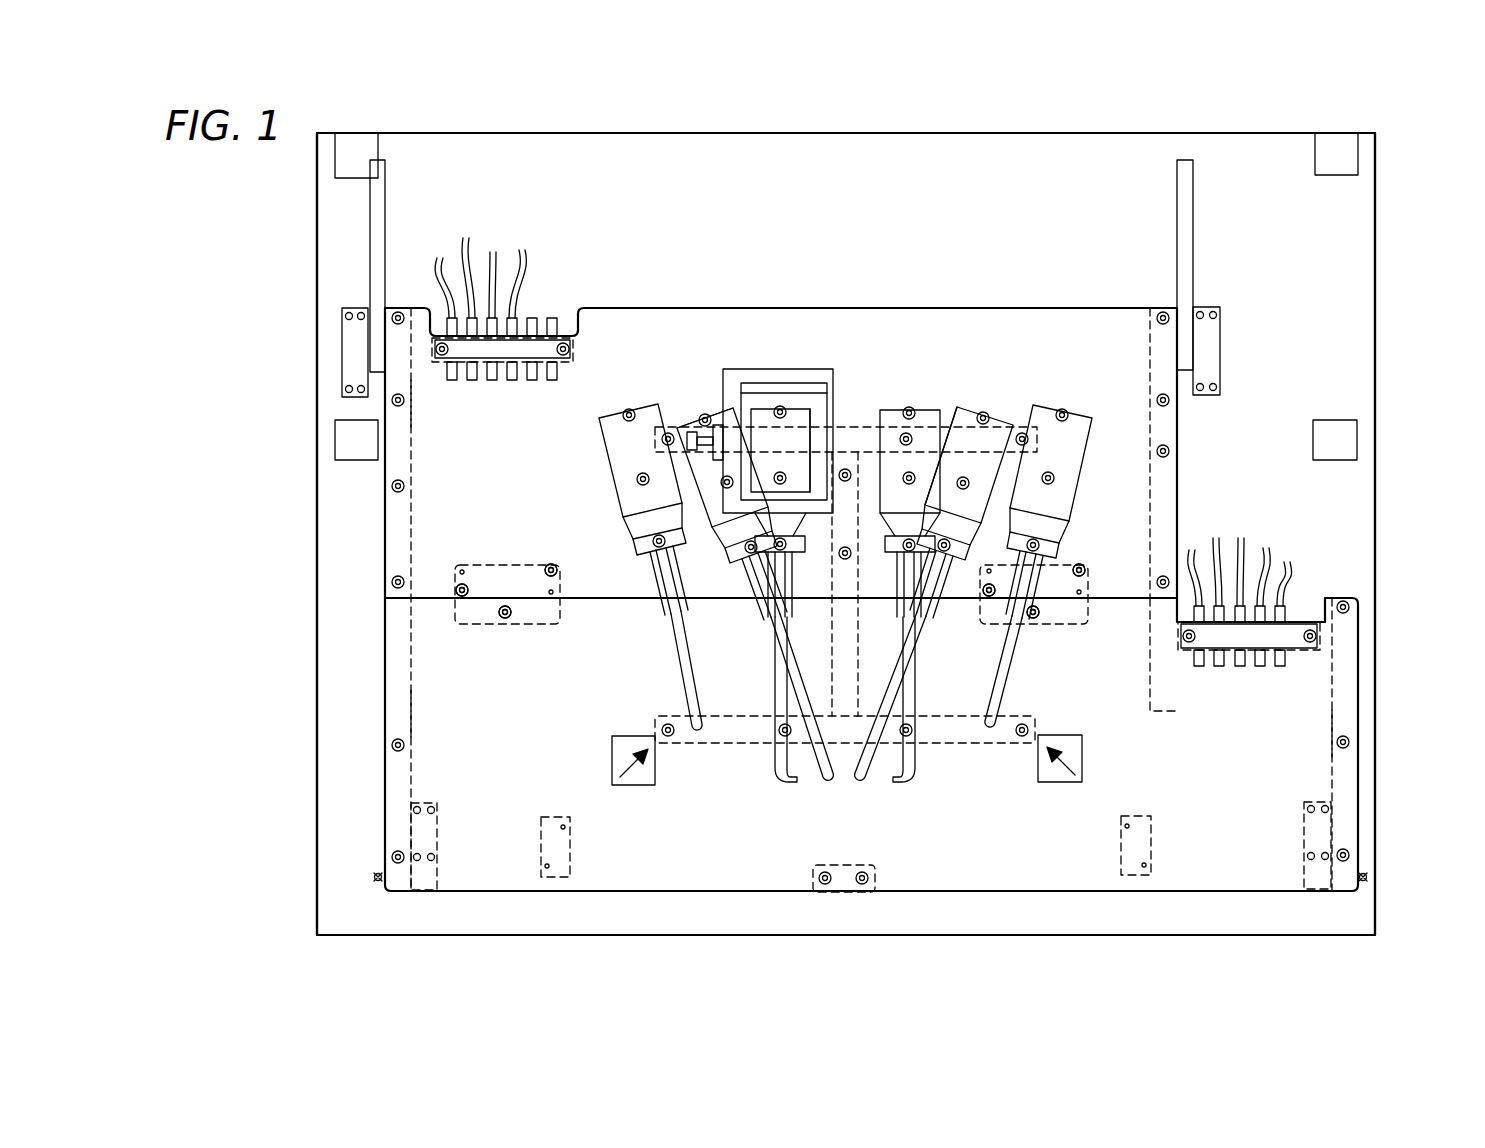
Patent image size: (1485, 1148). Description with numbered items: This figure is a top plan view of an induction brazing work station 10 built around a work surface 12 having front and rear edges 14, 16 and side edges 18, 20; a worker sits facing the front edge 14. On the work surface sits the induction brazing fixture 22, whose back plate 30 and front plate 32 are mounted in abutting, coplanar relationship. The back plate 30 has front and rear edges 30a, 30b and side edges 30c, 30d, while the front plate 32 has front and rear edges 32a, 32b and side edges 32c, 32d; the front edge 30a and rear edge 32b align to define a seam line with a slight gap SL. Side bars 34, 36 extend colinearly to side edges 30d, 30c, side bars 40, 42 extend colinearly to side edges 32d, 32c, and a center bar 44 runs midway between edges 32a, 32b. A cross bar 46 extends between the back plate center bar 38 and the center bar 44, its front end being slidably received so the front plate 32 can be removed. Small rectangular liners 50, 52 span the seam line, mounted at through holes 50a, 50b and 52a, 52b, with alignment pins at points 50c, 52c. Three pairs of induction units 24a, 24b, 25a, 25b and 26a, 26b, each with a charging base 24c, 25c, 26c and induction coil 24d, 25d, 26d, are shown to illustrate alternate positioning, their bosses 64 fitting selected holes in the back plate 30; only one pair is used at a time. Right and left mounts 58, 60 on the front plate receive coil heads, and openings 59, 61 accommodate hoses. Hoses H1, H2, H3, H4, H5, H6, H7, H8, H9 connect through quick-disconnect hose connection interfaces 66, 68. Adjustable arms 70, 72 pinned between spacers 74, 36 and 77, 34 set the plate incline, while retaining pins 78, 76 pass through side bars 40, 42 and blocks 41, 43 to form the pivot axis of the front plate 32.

The induction brazing work station 10 is at (236, 264).
The work surface 12 is at (822, 200).
The front edge 14 is at (862, 936).
The rear edge 16 is at (690, 130).
The side edge 18 is at (1375, 500).
The side edge 20 is at (317, 548).
The induction brazing fixture 22 is at (1278, 295).
The induction unit 24a is at (632, 408).
The induction unit 24b is at (1066, 410).
The charging base 24c is at (615, 452).
The induction coil 24d is at (680, 672).
The induction unit 25a is at (697, 418).
The induction unit 25b is at (983, 405).
The charging base 25c is at (690, 580).
The induction coil 25d is at (838, 740).
The induction unit 26a is at (780, 402).
The induction unit 26b is at (890, 408).
The charging base 26c is at (812, 410).
The induction coil 26d is at (772, 690).
The back plate 30 is at (613, 330).
The front edge 30a is at (620, 598).
The rear edge 30b is at (770, 306).
The side edge 30c is at (1180, 440).
The side edge 30d is at (385, 502).
The front plate 32 is at (871, 745).
The front edge 32a is at (930, 892).
The rear edge 32b is at (597, 600).
The side edge 32c is at (1358, 645).
The side edge 32d is at (385, 720).
The side bar 34 is at (411, 400).
The side bar 36 is at (1190, 417).
The back plate center bar 38 is at (835, 400).
The side bar 40 is at (411, 712).
The block 41 is at (437, 830).
The side bar 42 is at (1332, 735).
The block 43 is at (1304, 845).
The center bar 44 is at (743, 745).
The cross bar 46 is at (835, 608).
The liner 50 is at (500, 565).
The through hole 50a is at (455, 588).
The through hole 50b is at (551, 568).
The alignment pin point 50c is at (505, 618).
The liner 52 is at (1082, 600).
The through hole 52a is at (988, 600).
The through hole 52b is at (1080, 568).
The alignment pin point 52c is at (1036, 620).
The right mount 58 is at (570, 850).
The opening 59 is at (612, 758).
The left mount 60 is at (1151, 835).
The opening 61 is at (1082, 752).
The bosses 64 is at (622, 415).
The hose connection interface 66 is at (1242, 650).
The hose connection interface 68 is at (568, 340).
The adjustable arm 70 is at (1183, 214).
The adjustable arm 72 is at (372, 222).
The spacer 74 is at (1210, 345).
The retaining pin 76 is at (1363, 877).
The spacer 77 is at (357, 350).
The retaining pin 78 is at (378, 877).
The seam line SL is at (578, 588).
The hose H1 is at (1290, 562).
The hose H2 is at (1268, 548).
The hose H3 is at (1243, 537).
The hose H4 is at (1218, 536).
The hose H5 is at (1192, 548).
The hose H6 is at (521, 250).
The hose H7 is at (493, 248).
The hose H8 is at (477, 236).
The hose H9 is at (438, 272).